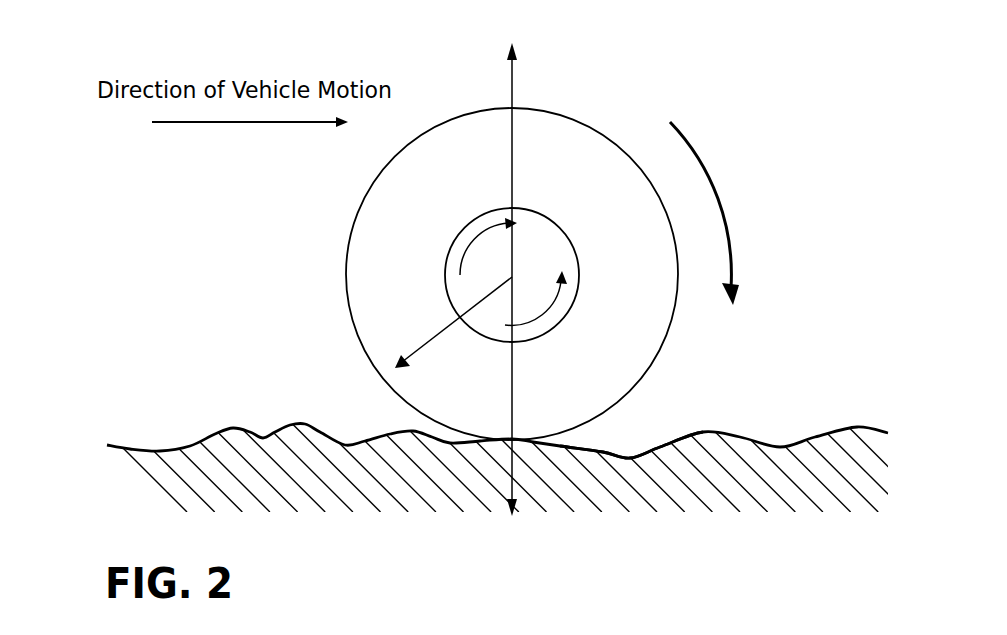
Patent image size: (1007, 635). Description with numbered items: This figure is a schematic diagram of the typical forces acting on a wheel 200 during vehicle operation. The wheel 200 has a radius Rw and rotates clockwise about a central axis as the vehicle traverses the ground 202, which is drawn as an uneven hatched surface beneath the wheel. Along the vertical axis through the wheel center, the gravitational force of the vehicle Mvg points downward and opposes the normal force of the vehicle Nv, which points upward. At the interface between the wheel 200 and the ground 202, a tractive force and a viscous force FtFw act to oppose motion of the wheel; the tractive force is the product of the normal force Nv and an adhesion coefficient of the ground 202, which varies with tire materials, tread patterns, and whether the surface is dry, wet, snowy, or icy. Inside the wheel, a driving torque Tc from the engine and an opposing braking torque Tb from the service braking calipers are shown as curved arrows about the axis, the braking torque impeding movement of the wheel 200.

The wheel 200 is at (600, 132).
The ground 202 is at (262, 433).
The normal force of the vehicle Nv is at (535, 152).
The gravitational force of the vehicle Mvg is at (545, 395).
The crankshaft torque Tc is at (488, 249).
The torque supplied by the calipers Tb is at (536, 298).
The radius of the wheel Rw is at (453, 333).
The tractive force and viscous force FtFw is at (642, 423).